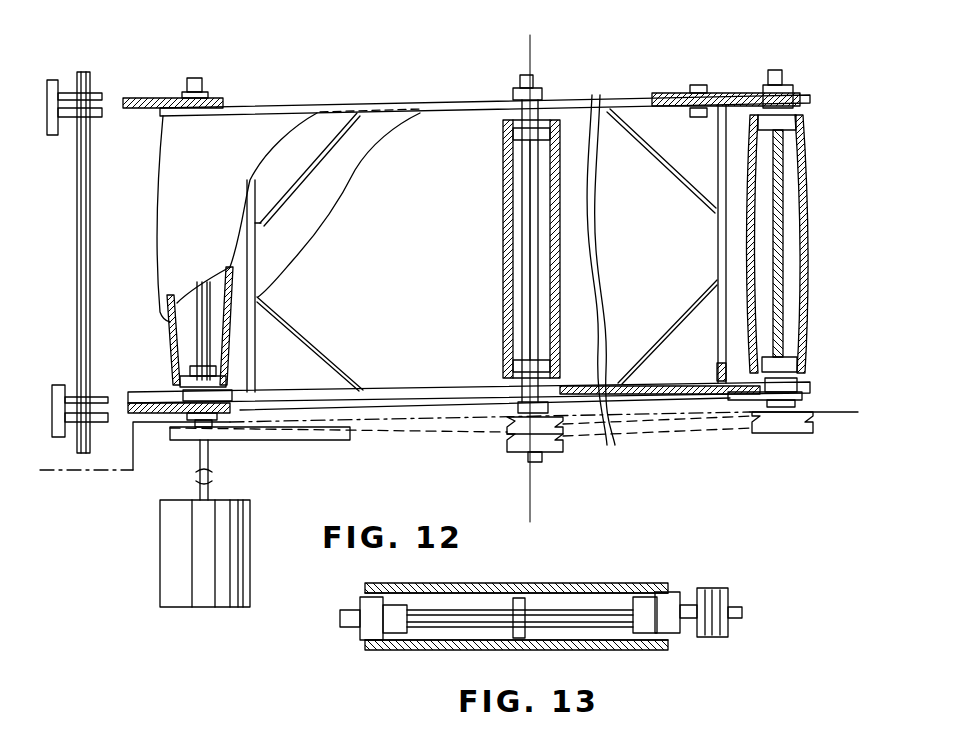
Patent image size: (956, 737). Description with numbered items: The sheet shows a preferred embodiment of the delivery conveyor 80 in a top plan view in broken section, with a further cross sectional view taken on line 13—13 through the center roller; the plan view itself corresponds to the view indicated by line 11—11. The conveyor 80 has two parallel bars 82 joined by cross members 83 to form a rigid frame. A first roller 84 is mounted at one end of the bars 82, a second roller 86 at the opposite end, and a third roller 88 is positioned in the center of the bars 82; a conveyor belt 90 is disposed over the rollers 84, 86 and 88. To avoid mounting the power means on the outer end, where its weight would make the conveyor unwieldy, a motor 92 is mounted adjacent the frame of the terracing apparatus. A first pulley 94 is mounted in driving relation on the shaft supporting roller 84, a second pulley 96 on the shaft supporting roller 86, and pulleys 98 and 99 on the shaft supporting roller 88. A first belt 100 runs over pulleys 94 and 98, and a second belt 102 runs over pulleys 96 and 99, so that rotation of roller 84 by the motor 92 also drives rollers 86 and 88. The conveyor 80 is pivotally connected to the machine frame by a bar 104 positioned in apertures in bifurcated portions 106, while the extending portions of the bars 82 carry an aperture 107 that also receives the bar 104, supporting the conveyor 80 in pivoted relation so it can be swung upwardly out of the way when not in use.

In FIG. 12, the line 11— 11 is at (48, 473).
In FIG. 12, the line 13— 13 is at (525, 50).
In FIG. 12, the delivery conveyor 80 is at (386, 102).
In FIG. 13, the delivery conveyor 80 is at (497, 585).
In FIG. 12, the parallel bars 82 is at (561, 105).
In FIG. 12, the cross members 83 is at (256, 362).
In FIG. 12, the first roller 84 is at (170, 350).
In FIG. 12, the second roller 86 is at (810, 130).
In FIG. 12, the third roller 88 is at (505, 304).
In FIG. 13, the third roller 88 is at (560, 592).
In FIG. 12, the conveyor belt 90 is at (259, 125).
In FIG. 12, the motor 92 is at (233, 502).
In FIG. 12, the first pulley 94 is at (196, 450).
In FIG. 12, the second pulley 96 is at (775, 432).
In FIG. 12, the pulley 98 is at (567, 430).
In FIG. 13, the pulley 98 is at (712, 588).
In FIG. 12, the pulley 99 is at (541, 458).
In FIG. 13, the pulley 99 is at (725, 600).
In FIG. 12, the first belt 100 is at (296, 441).
In FIG. 12, the second belt 102 is at (665, 425).
In FIG. 12, the bar 104 is at (90, 300).
In FIG. 12, the bifurcated portions 106 is at (66, 80).
In FIG. 12, the aperture 107 is at (140, 99).